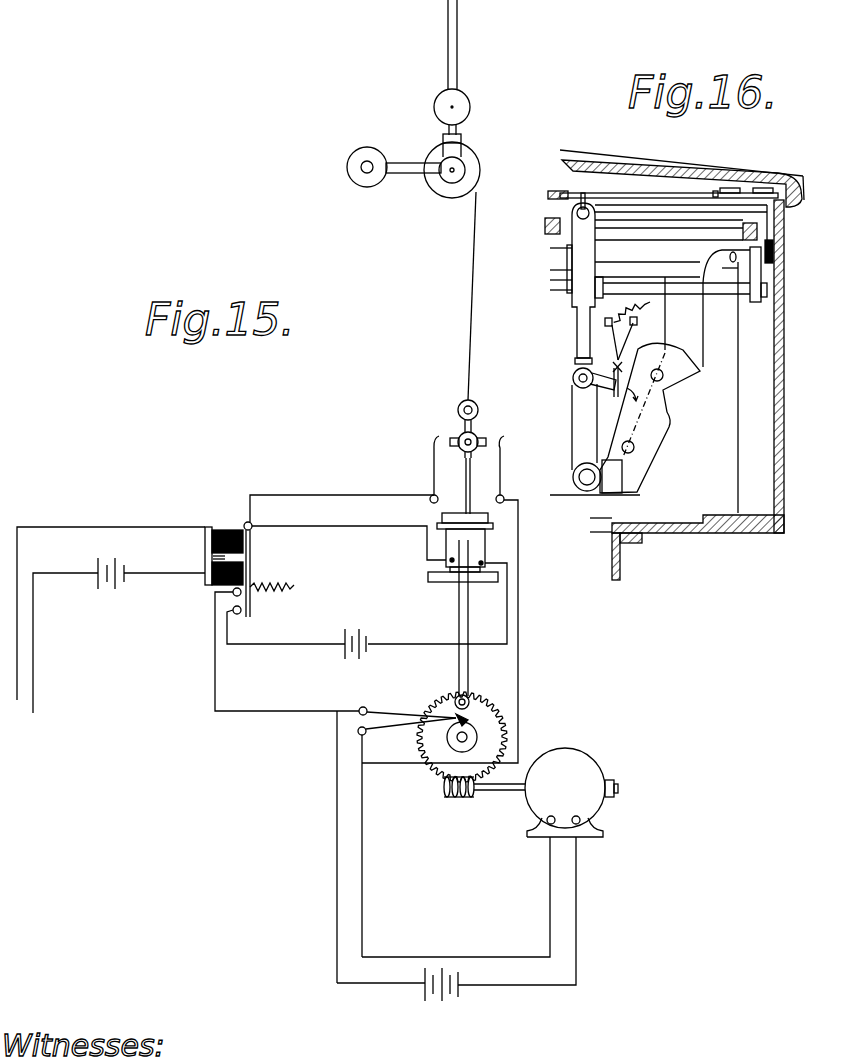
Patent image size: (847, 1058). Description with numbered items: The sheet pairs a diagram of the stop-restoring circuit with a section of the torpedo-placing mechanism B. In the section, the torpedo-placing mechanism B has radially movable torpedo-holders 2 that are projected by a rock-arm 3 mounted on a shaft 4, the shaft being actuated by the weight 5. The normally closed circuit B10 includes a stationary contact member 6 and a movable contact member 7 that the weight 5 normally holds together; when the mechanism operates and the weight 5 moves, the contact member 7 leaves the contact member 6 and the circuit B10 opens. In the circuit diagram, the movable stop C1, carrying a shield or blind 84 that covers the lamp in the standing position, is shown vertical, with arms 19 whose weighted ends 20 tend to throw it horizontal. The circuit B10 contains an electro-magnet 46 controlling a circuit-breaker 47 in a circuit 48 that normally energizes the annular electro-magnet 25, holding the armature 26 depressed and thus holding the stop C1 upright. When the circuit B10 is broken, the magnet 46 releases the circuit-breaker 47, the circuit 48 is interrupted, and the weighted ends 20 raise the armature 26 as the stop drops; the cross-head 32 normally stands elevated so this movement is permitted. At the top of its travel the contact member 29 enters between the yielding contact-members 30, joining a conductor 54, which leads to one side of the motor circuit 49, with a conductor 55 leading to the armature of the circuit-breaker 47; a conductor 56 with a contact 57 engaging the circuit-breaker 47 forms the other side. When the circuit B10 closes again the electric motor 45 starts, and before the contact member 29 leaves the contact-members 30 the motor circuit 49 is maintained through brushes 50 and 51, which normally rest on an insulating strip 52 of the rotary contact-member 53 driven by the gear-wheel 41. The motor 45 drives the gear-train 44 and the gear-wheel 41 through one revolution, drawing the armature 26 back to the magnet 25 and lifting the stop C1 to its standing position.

In FIG. 15, the movable stop C1 is at (459, 32).
In FIG. 15, the shield or blind 84 is at (468, 98).
In FIG. 15, the arms 19 is at (405, 162).
In FIG. 15, the weighted ends 20 is at (373, 182).
In FIG. 15, the cross-head 32 is at (477, 437).
In FIG. 15, the yielding contact-members 30 is at (432, 462).
In FIG. 15, the conductor 55 is at (294, 493).
In FIG. 15, the electric-contact member 29 is at (440, 524).
In FIG. 15, the armature 26 is at (490, 520).
In FIG. 15, the annular electro-magnet 25 is at (482, 549).
In FIG. 15, the electric circuit 48 is at (392, 530).
In FIG. 15, the normally closed electric circuit B10 is at (111, 599).
In FIG. 16, the normally closed electric circuit B10 is at (733, 324).
In FIG. 15, the electro-magnet 46 is at (224, 529).
In FIG. 15, the circuit-breaker 47 is at (252, 556).
In FIG. 15, the contact 57 is at (232, 592).
In FIG. 15, the conductor 54 is at (520, 638).
In FIG. 15, the conductor 56 is at (284, 713).
In FIG. 15, the brush 50 is at (392, 700).
In FIG. 15, the brush 51 is at (407, 837).
In FIG. 15, the gear-wheel 41 is at (500, 721).
In FIG. 15, the insulating strip 52 is at (478, 733).
In FIG. 15, the rotary contact-member 53 is at (452, 748).
In FIG. 15, the gear-train 44 is at (456, 800).
In FIG. 15, the electric motor 45 is at (571, 792).
In FIG. 15, the motor circuit 49 is at (338, 893).
In FIG. 16, the torpedo-holders 2 is at (637, 193).
In FIG. 16, the rock-arm 3 is at (578, 347).
In FIG. 16, the shaft 4 is at (573, 477).
In FIG. 16, the weight 5 is at (650, 385).
In FIG. 16, the stationary contact member 6 is at (607, 332).
In FIG. 16, the movable contact member 7 is at (628, 362).
In FIG. 16, the torpedo-placing mechanism B is at (792, 326).